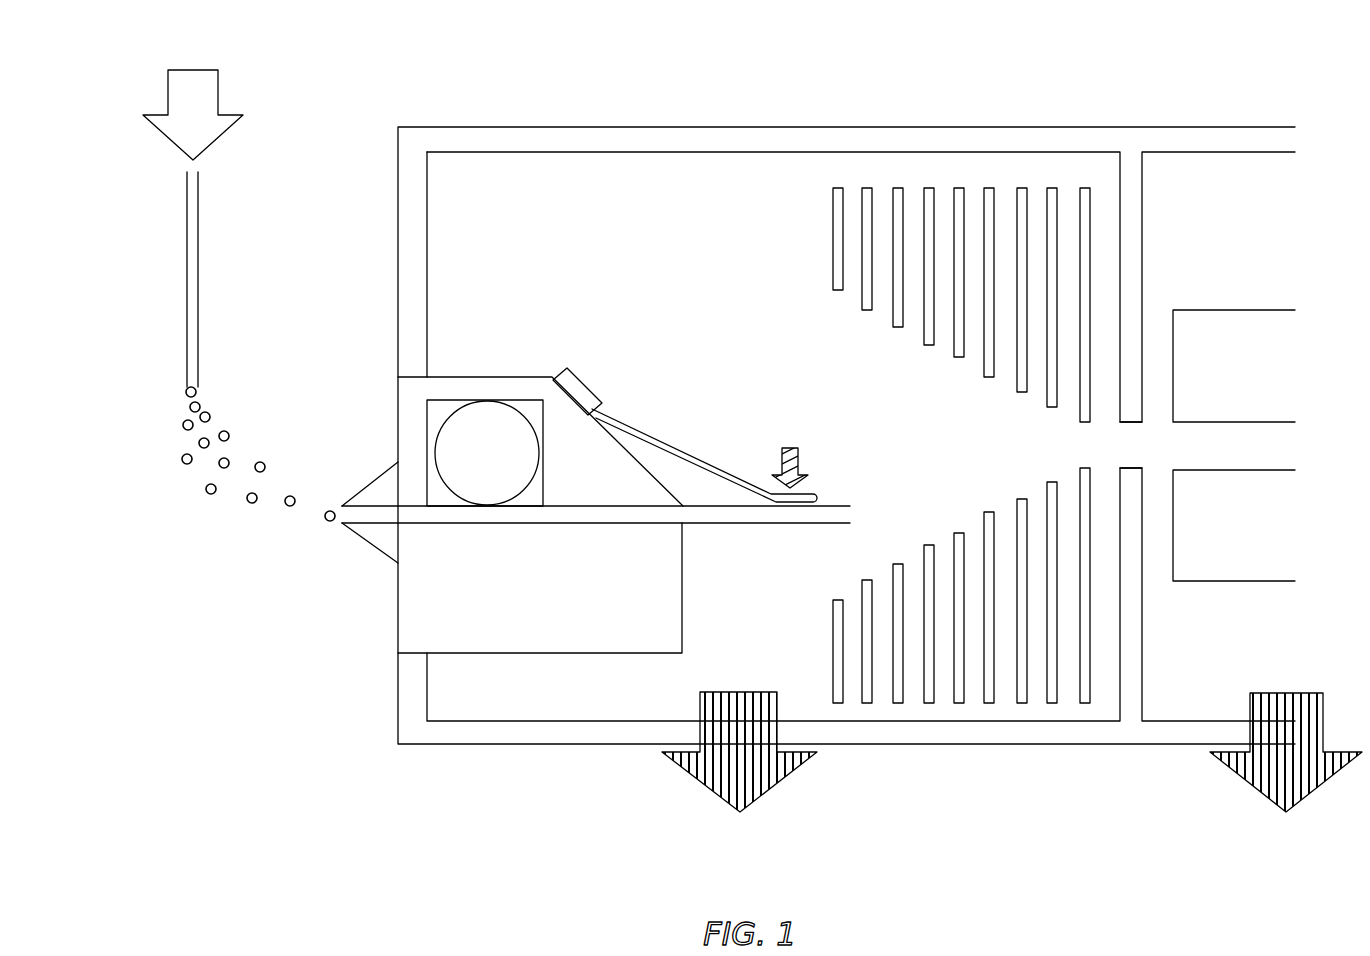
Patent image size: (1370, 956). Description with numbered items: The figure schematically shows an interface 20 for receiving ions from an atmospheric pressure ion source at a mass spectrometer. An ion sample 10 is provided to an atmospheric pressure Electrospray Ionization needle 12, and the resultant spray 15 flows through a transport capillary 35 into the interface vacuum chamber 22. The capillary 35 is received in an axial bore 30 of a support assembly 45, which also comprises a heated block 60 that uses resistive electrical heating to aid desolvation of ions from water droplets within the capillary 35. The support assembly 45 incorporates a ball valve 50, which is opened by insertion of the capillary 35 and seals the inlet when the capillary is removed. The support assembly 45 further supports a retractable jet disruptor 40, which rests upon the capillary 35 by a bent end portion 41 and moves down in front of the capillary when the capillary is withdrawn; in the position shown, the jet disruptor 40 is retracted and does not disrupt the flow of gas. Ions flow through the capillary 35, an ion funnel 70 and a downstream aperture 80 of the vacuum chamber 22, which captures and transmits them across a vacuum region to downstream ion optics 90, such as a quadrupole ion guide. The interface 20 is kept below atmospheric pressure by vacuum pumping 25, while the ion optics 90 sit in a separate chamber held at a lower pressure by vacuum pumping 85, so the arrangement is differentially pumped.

The ion sample 10 is at (193, 93).
The Electrospray Ionization needle 12 is at (167, 279).
The spray 15 is at (235, 454).
The interface 20 is at (380, 126).
The interface vacuum chamber 22 is at (861, 401).
The vacuum pumping 25 is at (739, 775).
The axial bore 30 is at (432, 512).
The transport capillary 35 is at (596, 534).
The retractable jet disruptor 40 is at (685, 431).
The bent end portion 41 is at (818, 480).
The support assembly 45 is at (503, 375).
The ball valve 50 is at (485, 453).
The heated block 60 is at (540, 588).
The ion funnel 70 is at (937, 445).
The downstream aperture 80 is at (1135, 445).
The vacuum pumping 85 is at (1286, 775).
The downstream ion optics 90 is at (1234, 445).